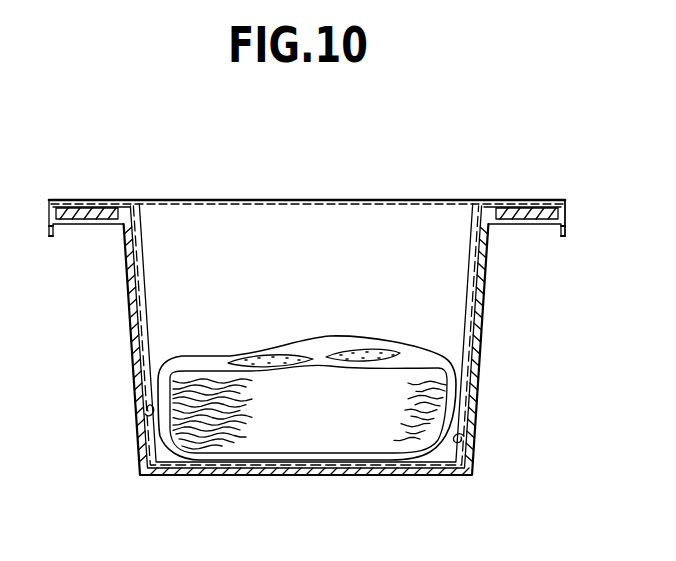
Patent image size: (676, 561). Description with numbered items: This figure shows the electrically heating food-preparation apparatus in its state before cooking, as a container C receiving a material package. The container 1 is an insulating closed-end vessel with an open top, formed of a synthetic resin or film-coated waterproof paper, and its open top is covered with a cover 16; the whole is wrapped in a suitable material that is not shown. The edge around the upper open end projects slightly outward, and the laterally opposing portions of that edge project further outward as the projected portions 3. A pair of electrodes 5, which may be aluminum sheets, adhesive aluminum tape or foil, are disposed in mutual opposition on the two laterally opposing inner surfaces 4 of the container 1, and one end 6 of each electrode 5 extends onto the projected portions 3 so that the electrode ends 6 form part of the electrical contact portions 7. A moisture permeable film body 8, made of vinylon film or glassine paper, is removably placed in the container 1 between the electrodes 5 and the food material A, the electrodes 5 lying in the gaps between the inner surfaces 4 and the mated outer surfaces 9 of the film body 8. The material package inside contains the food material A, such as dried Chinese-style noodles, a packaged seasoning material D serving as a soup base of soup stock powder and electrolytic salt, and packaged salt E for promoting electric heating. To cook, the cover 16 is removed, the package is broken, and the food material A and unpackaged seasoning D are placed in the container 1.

The container 1 is at (483, 333).
The projected portions 3 is at (108, 218).
The inner surfaces 4 is at (145, 414).
The electrode 5 is at (146, 363).
The electrode end 6 is at (94, 208).
The electrical contact portions 7 is at (67, 242).
The moisture permeable film body 8 is at (148, 262).
The outer surfaces 9 is at (138, 310).
The cover 16 is at (352, 200).
The food material A is at (262, 444).
The container receiving a material package C is at (549, 185).
The packaged seasoning material D is at (273, 358).
The packaged salt E is at (367, 355).